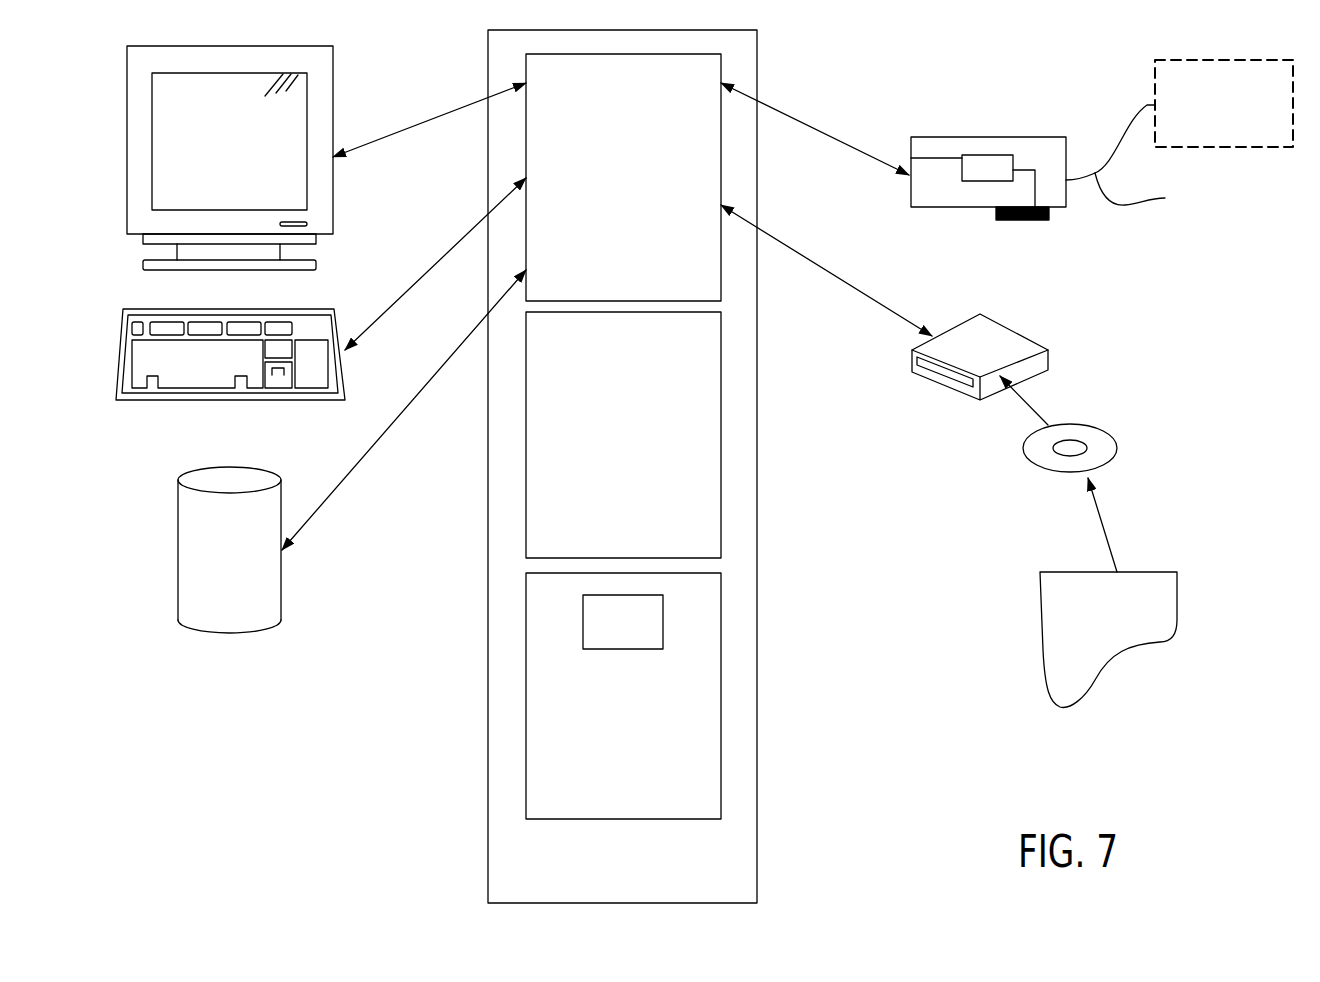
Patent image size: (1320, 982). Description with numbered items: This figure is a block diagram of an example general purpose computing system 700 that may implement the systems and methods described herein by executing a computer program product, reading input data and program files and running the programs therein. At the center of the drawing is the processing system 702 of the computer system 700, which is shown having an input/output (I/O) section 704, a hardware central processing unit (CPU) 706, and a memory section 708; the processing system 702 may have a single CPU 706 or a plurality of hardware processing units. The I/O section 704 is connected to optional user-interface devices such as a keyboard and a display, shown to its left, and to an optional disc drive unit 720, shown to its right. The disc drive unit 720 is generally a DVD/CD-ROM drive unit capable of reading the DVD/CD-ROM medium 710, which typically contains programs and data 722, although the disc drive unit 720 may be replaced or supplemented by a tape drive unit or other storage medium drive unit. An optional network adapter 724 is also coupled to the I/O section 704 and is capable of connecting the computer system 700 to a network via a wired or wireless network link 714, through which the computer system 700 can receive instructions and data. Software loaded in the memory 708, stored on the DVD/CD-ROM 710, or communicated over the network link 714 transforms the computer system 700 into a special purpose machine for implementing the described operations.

The computing system 700 is at (354, 792).
The processing system 702 is at (608, 877).
The input/output (I/O) section 704 is at (608, 198).
The hardware central processing unit (CPU) 706 is at (608, 455).
The memory section 708 is at (608, 717).
The DVD/CD-ROM medium 710 is at (1112, 432).
The network link 714 is at (1179, 136).
The disc drive unit 720 is at (990, 313).
The programs and data 722 is at (1040, 588).
The network adapter 724 is at (953, 137).